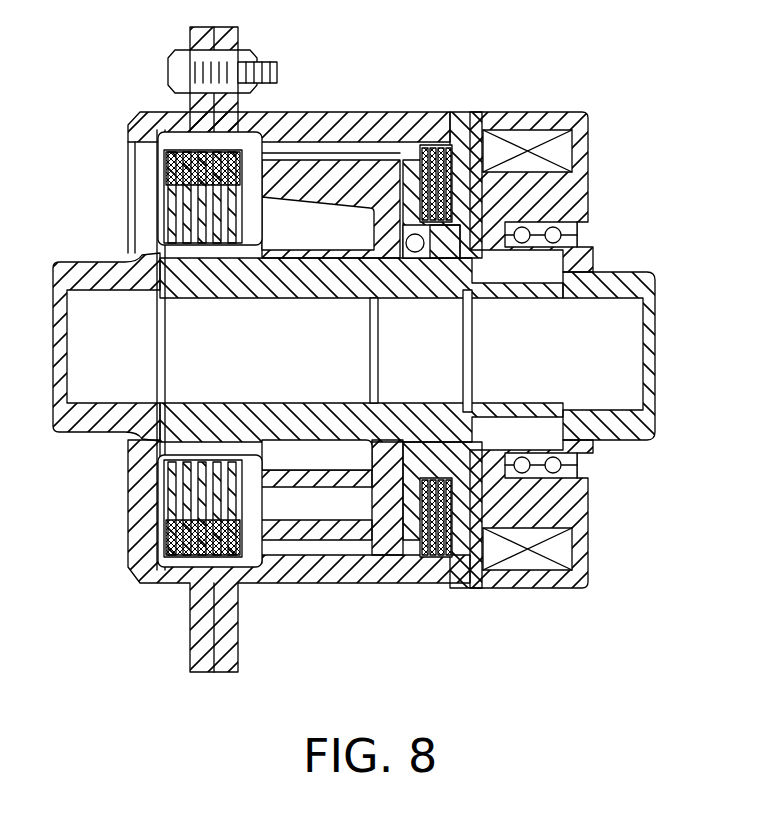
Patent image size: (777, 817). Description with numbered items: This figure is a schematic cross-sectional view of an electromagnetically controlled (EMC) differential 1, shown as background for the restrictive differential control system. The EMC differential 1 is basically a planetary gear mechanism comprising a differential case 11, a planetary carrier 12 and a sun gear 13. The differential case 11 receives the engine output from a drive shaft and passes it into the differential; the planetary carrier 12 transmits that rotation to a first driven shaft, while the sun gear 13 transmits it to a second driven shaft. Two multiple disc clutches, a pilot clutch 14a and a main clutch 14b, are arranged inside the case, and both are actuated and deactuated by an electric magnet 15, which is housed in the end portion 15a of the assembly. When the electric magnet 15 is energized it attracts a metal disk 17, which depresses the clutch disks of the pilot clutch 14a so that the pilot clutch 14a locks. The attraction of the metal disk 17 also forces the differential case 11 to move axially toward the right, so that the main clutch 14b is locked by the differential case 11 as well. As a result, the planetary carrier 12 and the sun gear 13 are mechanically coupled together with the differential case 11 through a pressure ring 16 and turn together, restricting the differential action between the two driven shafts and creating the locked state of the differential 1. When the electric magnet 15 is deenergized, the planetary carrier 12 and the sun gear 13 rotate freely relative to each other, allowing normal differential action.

The EMC differential 1 is at (456, 72).
The differential case 11 is at (300, 120).
The planetary carrier 12 is at (385, 165).
The sun gear 13 is at (302, 402).
The pilot clutch 14a is at (440, 140).
The main clutch 14b is at (160, 172).
The electric magnet 15 is at (565, 151).
The coil housing 15a is at (580, 200).
The pressure ring 16 is at (432, 232).
The metal disk 17 is at (415, 148).